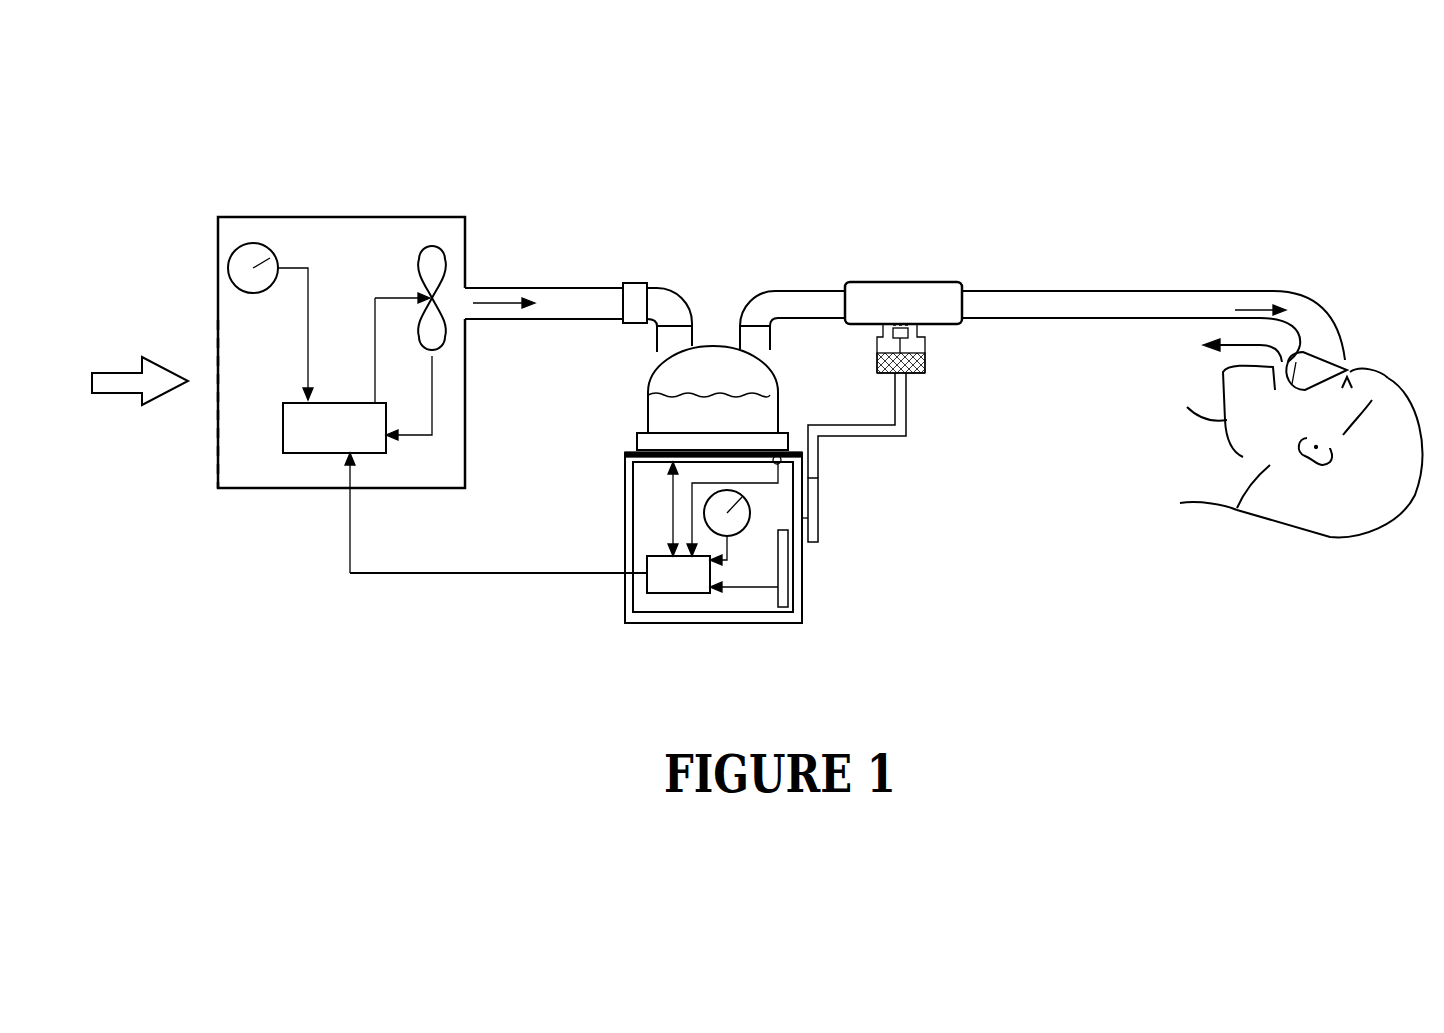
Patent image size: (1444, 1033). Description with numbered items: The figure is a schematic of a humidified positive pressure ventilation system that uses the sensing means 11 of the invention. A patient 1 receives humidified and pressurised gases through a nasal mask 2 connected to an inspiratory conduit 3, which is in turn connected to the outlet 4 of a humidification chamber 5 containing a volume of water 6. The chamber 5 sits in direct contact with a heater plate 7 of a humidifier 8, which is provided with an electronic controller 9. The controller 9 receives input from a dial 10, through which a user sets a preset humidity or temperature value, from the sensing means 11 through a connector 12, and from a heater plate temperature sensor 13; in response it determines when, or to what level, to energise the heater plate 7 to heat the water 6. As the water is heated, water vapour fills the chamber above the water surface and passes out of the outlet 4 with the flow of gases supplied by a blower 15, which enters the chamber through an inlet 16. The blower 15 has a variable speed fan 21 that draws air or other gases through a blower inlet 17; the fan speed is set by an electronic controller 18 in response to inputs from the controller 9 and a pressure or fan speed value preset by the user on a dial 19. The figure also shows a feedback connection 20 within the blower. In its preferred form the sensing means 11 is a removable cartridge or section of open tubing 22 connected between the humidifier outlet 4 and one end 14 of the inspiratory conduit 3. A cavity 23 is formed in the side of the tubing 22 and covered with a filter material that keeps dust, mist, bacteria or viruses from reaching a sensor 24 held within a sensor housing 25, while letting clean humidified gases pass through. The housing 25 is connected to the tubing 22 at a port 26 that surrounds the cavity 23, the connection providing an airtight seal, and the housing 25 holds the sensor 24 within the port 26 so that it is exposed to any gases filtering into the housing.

The patient 1 is at (1258, 522).
The nasal mask 2 is at (1350, 358).
The inspiratory conduit 3 is at (1127, 319).
The outlet 4 is at (740, 325).
The humidification chamber 5 is at (648, 388).
The water 6 is at (709, 413).
The heater plate 7 is at (637, 440).
The humidifier 8 is at (625, 525).
The electronic controller 9 is at (530, 574).
The dial 10 is at (735, 536).
The sensing means 11 is at (896, 288).
The connector 12 is at (803, 545).
The heater plate temperature sensor 13 is at (320, 453).
The end of the inspiratory conduit 14 is at (972, 278).
The blower 15 is at (355, 217).
The inlet 16 is at (657, 350).
The blower inlet 17 is at (218, 425).
The electronic controller 18 is at (781, 460).
The dial 19 is at (258, 243).
The feedback line 20 is at (432, 425).
The variable speed fan 21 is at (437, 243).
The section of open tubing 22 is at (918, 283).
The cavity 23 is at (915, 336).
The sensor 24 is at (920, 374).
The sensor housing 25 is at (855, 375).
The port 26 is at (880, 330).